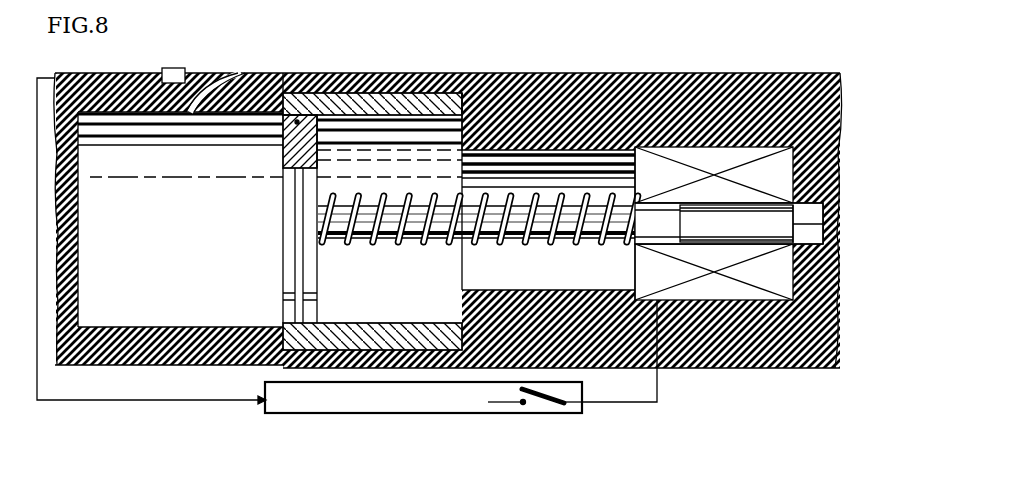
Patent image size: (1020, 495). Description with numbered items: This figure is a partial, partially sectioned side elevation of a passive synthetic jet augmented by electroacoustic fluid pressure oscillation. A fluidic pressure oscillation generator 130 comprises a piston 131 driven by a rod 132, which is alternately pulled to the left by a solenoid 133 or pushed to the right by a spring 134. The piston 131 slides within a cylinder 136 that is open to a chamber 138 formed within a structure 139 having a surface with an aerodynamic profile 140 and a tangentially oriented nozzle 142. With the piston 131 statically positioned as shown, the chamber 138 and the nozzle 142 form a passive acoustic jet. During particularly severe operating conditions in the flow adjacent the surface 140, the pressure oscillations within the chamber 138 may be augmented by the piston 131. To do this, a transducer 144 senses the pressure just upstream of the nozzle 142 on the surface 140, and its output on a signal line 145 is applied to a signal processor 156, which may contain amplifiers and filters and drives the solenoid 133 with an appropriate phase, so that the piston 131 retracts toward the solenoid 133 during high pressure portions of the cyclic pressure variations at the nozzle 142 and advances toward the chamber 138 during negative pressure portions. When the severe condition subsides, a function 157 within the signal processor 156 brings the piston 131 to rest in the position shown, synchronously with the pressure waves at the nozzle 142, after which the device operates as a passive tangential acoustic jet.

The structure 139 is at (570, 61).
The surface with an aerodynamic profile 140 is at (351, 73).
The tangentially oriented nozzle 142 is at (241, 73).
The transducer 144 is at (177, 68).
The piston 131 is at (287, 220).
The chamber 138 is at (160, 297).
The cylinder 136 is at (398, 330).
The spring 134 is at (565, 247).
The fluidic pressure oscillation generator 130 is at (616, 294).
The solenoid 133 is at (733, 201).
The rod 132 is at (676, 223).
The signal line 145 is at (107, 400).
The signal processor 156 is at (357, 413).
The function 157 is at (547, 407).